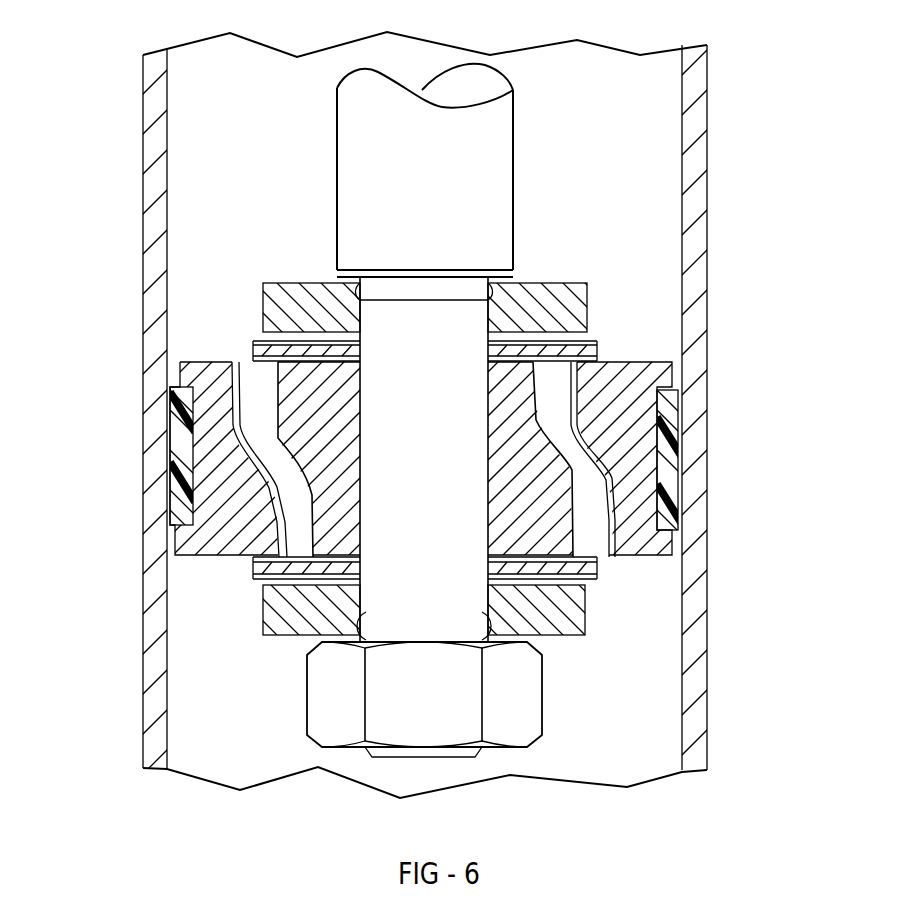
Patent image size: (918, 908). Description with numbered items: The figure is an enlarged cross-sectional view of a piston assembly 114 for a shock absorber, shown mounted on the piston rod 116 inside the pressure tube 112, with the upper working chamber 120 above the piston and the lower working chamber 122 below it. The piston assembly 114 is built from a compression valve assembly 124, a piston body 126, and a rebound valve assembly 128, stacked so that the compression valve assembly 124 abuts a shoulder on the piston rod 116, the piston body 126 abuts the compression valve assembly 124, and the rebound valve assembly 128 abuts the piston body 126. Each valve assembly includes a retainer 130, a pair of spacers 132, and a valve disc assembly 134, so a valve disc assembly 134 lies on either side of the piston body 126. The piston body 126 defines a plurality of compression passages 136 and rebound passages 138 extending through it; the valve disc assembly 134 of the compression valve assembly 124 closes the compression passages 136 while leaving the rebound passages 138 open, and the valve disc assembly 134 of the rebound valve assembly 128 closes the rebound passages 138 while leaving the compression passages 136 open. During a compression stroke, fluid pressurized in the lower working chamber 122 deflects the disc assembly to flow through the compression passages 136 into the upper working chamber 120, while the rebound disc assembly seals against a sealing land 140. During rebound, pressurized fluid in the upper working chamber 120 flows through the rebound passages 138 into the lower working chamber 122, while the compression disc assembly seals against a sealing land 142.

The housing wall 112 is at (697, 160).
The piston assembly 114 is at (637, 636).
The piston rod 116 is at (439, 186).
The upper working chamber 120 is at (622, 128).
The lower working chamber 122 is at (246, 748).
The compression valve assembly 124 is at (577, 245).
The piston body 126 is at (610, 448).
The rebound valve assembly 128 is at (297, 654).
The retainer 130 is at (568, 298).
The spacers 132 is at (356, 356).
The valve disc assembly 134 is at (597, 353).
The compression passages 136 is at (578, 362).
The rebound passages 138 is at (262, 437).
The sealing land 140 is at (276, 558).
The sealing land 142 is at (552, 402).